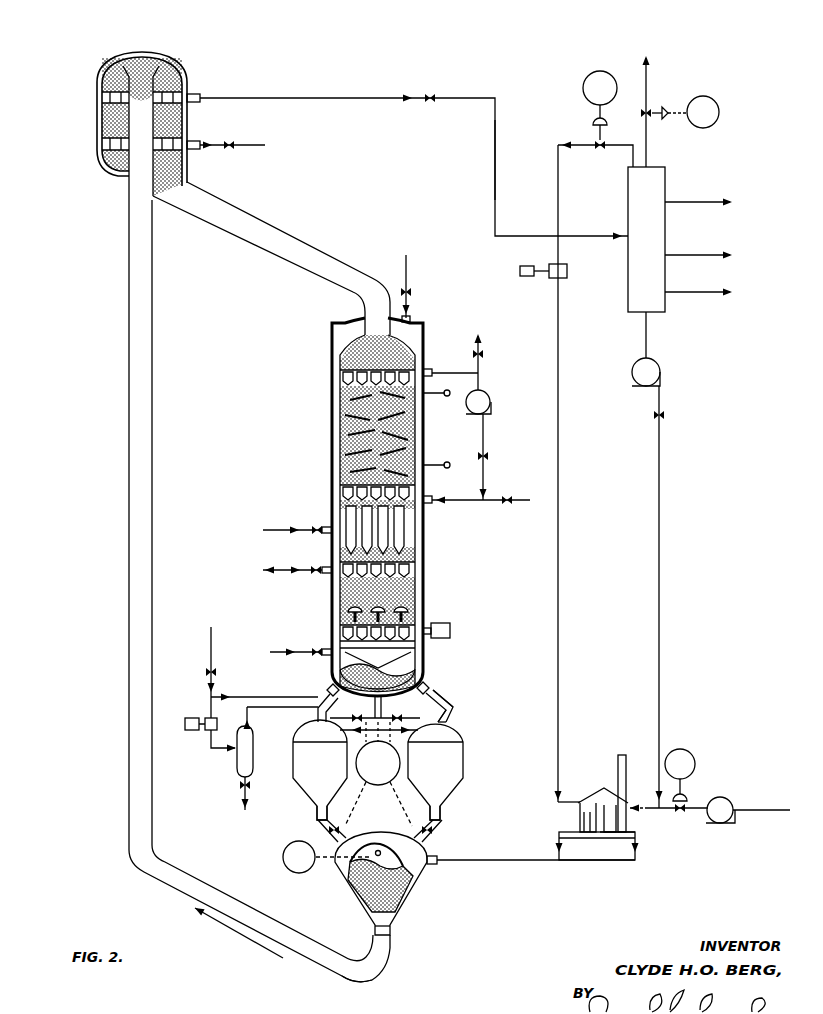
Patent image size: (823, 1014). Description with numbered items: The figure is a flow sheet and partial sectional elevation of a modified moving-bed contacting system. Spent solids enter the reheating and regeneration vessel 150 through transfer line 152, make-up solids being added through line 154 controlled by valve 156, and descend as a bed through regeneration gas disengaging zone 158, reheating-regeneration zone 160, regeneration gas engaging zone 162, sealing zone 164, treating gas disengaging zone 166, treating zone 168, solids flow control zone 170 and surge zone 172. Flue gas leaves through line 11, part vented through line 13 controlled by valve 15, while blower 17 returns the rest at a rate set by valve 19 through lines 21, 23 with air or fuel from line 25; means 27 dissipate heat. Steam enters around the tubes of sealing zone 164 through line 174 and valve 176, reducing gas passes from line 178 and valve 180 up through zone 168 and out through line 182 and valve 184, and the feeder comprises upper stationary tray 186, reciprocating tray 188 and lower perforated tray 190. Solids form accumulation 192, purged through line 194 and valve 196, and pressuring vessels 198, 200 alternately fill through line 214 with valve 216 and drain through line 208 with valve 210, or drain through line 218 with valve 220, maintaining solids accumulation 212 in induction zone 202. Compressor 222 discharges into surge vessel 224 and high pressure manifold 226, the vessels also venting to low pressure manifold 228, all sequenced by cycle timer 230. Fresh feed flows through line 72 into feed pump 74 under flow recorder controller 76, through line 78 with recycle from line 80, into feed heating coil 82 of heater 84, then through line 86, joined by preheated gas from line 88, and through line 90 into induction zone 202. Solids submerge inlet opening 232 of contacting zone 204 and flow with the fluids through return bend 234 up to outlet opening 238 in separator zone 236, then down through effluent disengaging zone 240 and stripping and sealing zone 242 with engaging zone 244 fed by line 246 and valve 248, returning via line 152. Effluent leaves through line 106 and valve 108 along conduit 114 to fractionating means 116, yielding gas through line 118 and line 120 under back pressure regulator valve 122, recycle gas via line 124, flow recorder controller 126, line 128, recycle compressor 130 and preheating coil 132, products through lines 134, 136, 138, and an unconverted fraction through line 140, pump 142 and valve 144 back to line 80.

The line 11 is at (468, 372).
The line 13 is at (483, 371).
The valve 15 is at (483, 352).
The blower 17 is at (491, 402).
The valve 19 is at (488, 456).
The line 21 is at (486, 431).
The line 23 is at (483, 498).
The line 25 is at (508, 499).
The heat dissipating means 27 is at (416, 436).
The line 72 is at (733, 810).
The feed pump 74 is at (720, 824).
The flow recorder controller 76 is at (697, 766).
The line 78 is at (684, 812).
The line 80 is at (661, 733).
The feed heating coil 82 is at (592, 795).
The heater 84 is at (578, 860).
The line 86 is at (612, 860).
The line 88 is at (559, 842).
The line 90 is at (506, 861).
The line 106 is at (396, 95).
The valve 108 is at (431, 93).
The effluent conduit 114 is at (495, 176).
The fractionating means 116 is at (648, 189).
The line 118 is at (649, 148).
The line 120 is at (648, 82).
The back pressure regulator valve 122 is at (716, 100).
The line 124 is at (617, 150).
The flow recorder controller 126 is at (584, 98).
The line 128 is at (560, 206).
The recycle compressor 130 is at (567, 268).
The preheating coil 132 is at (578, 800).
The line 134 is at (707, 203).
The line 136 is at (707, 256).
The line 138 is at (707, 293).
The line 140 is at (648, 346).
The pump 142 is at (661, 375).
The valve 144 is at (657, 418).
The reheating and regeneration vessel 150 is at (428, 330).
The transfer line 152 is at (358, 288).
The line 154 is at (408, 272).
The valve 156 is at (410, 296).
The reheating or regeneration gas disengaging zone 158 is at (342, 354).
The reheating-regeneration zone 160 is at (340, 440).
The regeneration gas engaging zone 162 is at (333, 500).
The sealing zone 164 is at (405, 540).
The treating gas disengaging zone 166 is at (416, 572).
The treating zone 168 is at (416, 598).
The solids flow control zone 170 is at (416, 616).
The surge zone 172 is at (418, 654).
The line 174 is at (278, 533).
The valve 176 is at (300, 528).
The line 178 is at (276, 650).
The valve 180 is at (289, 655).
The line 182 is at (318, 568).
The valve 184 is at (286, 573).
The upper stationary tray 186 is at (333, 630).
The intermediate reciprocating tray 188 is at (333, 640).
The lower perforated tray 190 is at (333, 658).
The solids accumulation 192 is at (418, 672).
The line 194 is at (452, 712).
The valve 196 is at (442, 699).
The intermediate pressuring vessel 198 is at (447, 764).
The pressuring vessel 200 is at (306, 762).
The induction zone 202 is at (421, 849).
The contacting zone 204 is at (129, 464).
The line 208 is at (441, 822).
The valve 210 is at (435, 832).
The accumulation of compact unfluidized solids 212 is at (352, 873).
The line 214 is at (448, 721).
The valve 216 is at (428, 690).
The line 218 is at (318, 821).
The valve 220 is at (329, 834).
The compressor 222 is at (210, 738).
The surge vessel 224 is at (236, 762).
The high pressure manifold 226 is at (374, 718).
The low pressure manifold 228 is at (300, 712).
The cycle timer 230 is at (364, 799).
The inlet opening 232 is at (396, 918).
The return bend 234 is at (340, 976).
The separator zone 236 is at (186, 72).
The outlet opening 238 is at (145, 78).
The contacting effluent disengaging zone 240 is at (103, 97).
The stripping and sealing zone 242 is at (103, 122).
The stripping gas engaging zone 244 is at (99, 150).
The line 246 is at (258, 142).
The valve 248 is at (231, 141).